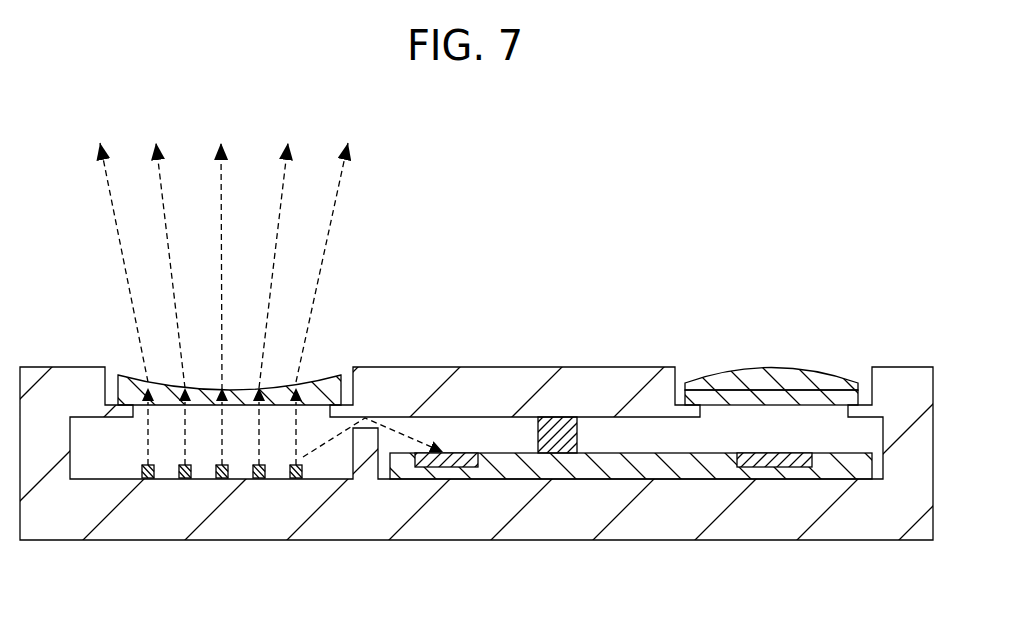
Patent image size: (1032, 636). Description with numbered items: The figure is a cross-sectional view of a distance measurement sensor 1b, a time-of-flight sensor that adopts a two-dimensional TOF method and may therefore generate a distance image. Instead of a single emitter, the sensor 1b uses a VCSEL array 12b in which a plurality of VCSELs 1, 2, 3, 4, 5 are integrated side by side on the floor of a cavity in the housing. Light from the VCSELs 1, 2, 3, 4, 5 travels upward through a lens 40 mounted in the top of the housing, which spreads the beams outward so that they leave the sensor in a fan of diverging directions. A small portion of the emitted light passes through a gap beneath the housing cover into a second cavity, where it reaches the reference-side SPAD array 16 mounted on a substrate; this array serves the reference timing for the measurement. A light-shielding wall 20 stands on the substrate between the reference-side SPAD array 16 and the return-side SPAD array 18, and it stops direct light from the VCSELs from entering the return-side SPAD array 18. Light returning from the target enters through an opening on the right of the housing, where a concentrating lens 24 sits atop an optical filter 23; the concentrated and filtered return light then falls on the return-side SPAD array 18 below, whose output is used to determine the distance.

The distance measurement sensor 1b is at (856, 145).
The lens (concave emitting lens) 40 is at (328, 377).
The VCSEL array 12b is at (221, 534).
The VCSEL 1 is at (148, 490).
The VCSEL 2 is at (185, 490).
The VCSEL 3 is at (222, 490).
The VCSEL 4 is at (259, 490).
The VCSEL 5 is at (296, 490).
The reference-side SPAD array 16 is at (460, 460).
The light-shielding wall 20 is at (557, 442).
The return-side SPAD array 18 is at (775, 460).
The concentrating lens 24 is at (768, 372).
The optical filter 23 is at (812, 395).